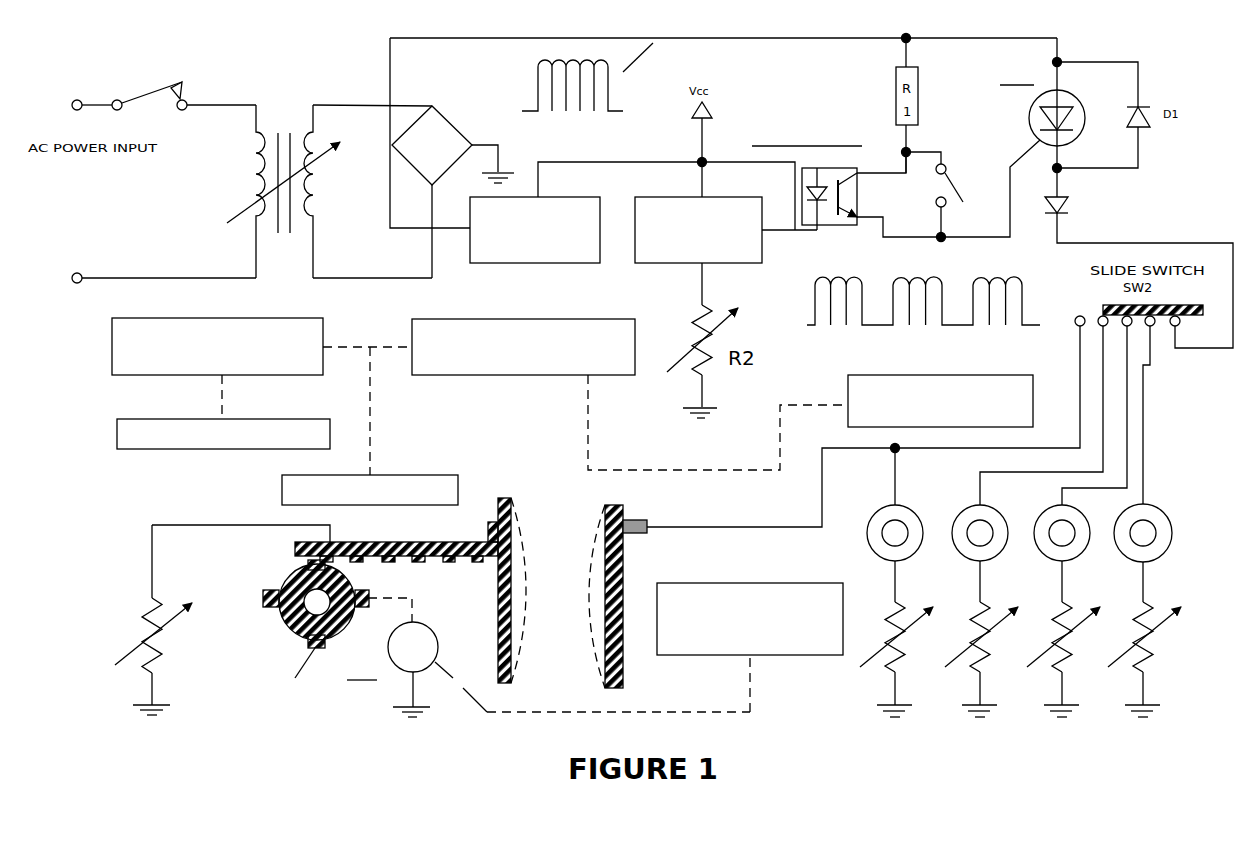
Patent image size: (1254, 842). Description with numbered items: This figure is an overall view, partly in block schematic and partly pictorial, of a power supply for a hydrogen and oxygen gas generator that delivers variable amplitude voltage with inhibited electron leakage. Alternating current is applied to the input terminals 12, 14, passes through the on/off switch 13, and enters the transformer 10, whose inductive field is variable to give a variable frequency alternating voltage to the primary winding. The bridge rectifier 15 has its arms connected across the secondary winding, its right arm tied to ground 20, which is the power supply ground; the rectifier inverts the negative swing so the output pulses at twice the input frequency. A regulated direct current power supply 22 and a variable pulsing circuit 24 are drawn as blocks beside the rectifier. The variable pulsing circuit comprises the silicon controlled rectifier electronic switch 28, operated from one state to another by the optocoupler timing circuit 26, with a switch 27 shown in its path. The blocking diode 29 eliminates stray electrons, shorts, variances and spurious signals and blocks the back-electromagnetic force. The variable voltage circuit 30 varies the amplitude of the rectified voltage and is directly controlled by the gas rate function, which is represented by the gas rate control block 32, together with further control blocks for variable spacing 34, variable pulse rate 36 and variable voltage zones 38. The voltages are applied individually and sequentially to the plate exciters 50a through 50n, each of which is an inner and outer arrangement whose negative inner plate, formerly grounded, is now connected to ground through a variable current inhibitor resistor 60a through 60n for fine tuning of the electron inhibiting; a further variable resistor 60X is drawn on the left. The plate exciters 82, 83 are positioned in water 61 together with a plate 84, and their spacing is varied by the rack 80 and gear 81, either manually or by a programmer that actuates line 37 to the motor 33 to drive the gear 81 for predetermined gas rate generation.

The transformer 10 is at (210, 214).
The input alternating current terminal 12 is at (77, 99).
The switch 13 is at (149, 98).
The input alternating current terminal 14 is at (81, 274).
The bridge rectifier 15 is at (448, 125).
The ground 20 is at (505, 162).
The regulated DC power supply 22 is at (487, 258).
The variable pulsing circuit 24 is at (663, 253).
The optocoupler timing circuit 26 is at (833, 218).
The switch SW3 27 is at (949, 196).
The SCR electronic switch 28 is at (1067, 102).
The blocking diode 29 is at (1027, 268).
The variable voltage circuit 30 is at (128, 368).
The gas rate control 32 is at (135, 442).
The motor 33 is at (428, 645).
The variable spacing control 34 is at (282, 498).
The variable pulse rate control 36 is at (442, 365).
The line 37 is at (755, 702).
The variable voltage zones control 38 is at (852, 380).
The plate exciter 50n is at (910, 503).
The plate exciter 50a is at (1167, 510).
The variable resistor 60X is at (161, 620).
The current inhibitor resistor 60n is at (901, 639).
The current inhibitor resistor 60a is at (1157, 639).
The water 61 is at (572, 615).
The rack 80 is at (295, 548).
The gear 81 is at (293, 623).
The plate exciter 82 is at (503, 610).
The plate exciter 83 is at (638, 517).
The electrode plate 84 is at (618, 660).